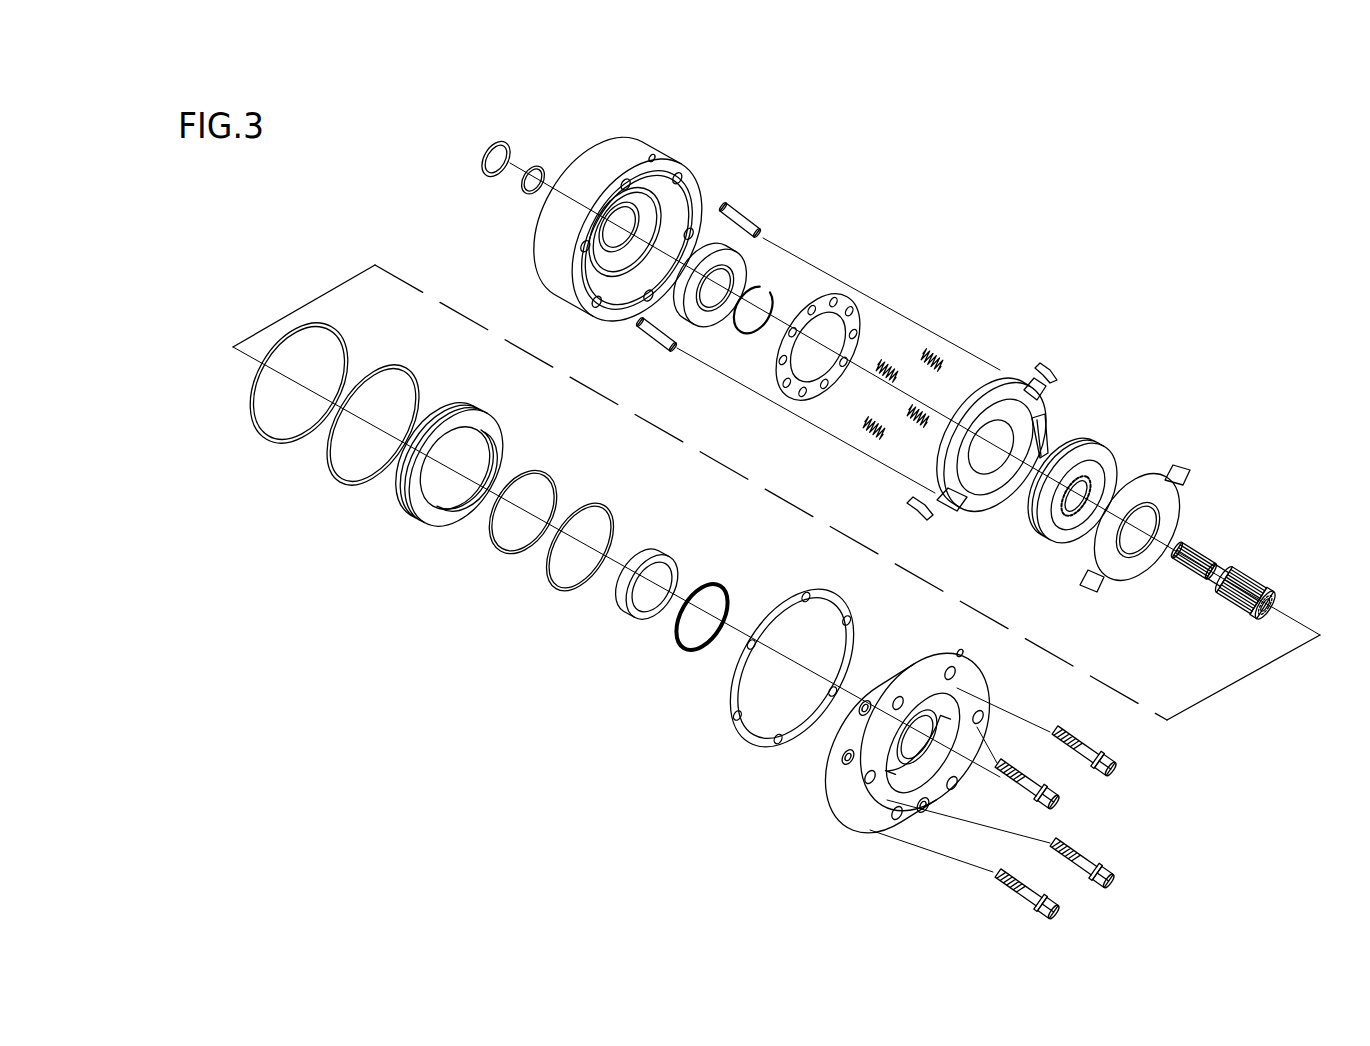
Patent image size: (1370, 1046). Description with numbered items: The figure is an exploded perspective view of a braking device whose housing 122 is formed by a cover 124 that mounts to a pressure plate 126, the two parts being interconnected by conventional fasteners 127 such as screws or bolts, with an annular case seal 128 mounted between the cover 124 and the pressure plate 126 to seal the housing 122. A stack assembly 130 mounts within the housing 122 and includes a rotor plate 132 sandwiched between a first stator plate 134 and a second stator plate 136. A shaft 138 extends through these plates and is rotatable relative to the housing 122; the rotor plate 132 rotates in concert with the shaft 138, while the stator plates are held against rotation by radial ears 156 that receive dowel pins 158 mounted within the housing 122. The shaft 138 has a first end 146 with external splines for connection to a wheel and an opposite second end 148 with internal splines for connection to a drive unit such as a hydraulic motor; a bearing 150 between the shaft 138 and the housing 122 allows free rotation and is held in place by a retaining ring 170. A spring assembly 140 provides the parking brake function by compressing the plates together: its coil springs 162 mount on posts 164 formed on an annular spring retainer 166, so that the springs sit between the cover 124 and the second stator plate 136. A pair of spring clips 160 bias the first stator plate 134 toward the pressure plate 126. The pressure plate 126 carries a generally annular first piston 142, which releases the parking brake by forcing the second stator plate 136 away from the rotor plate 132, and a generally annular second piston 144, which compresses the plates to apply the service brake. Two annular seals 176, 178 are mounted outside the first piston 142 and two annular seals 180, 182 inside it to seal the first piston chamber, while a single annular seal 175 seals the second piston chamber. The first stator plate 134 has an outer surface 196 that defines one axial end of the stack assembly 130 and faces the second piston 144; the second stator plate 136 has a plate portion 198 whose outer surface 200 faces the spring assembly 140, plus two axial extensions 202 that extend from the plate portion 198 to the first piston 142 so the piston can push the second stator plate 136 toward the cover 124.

The housing 122 is at (652, 153).
The cover 124 is at (630, 138).
The pressure plate 126 is at (985, 685).
The fasteners 127 is at (1103, 768).
The annular case seal 128 is at (737, 738).
The stack assembly 130 is at (1141, 388).
The rotor plate 132 is at (1097, 453).
The first stator plate 134 is at (1158, 536).
The second stator plate 136 is at (1012, 457).
The shaft 138 is at (1257, 574).
The spring assembly 140 is at (882, 280).
The first piston 142 is at (473, 413).
The second piston 144 is at (622, 613).
The first end 146 is at (1193, 532).
The second end 148 is at (1268, 601).
The bearing 150 is at (741, 262).
The radial ears 156 is at (1027, 387).
The dowel pins 158 is at (733, 207).
The spring clips 160 is at (1053, 363).
The coil springs 162 is at (930, 350).
The posts 164 is at (803, 387).
The annular spring retainer 166 is at (832, 297).
The retaining ring 170 is at (738, 330).
The annular seal 175 is at (680, 650).
The annular seal 176 is at (310, 325).
The annular seal 178 is at (387, 367).
The annular seal 180 is at (503, 553).
The annular seal 182 is at (553, 585).
The outer surface 196 is at (1127, 563).
The plate portion 198 is at (968, 483).
The outer surface 200 is at (972, 407).
The axial extensions 202 is at (997, 405).